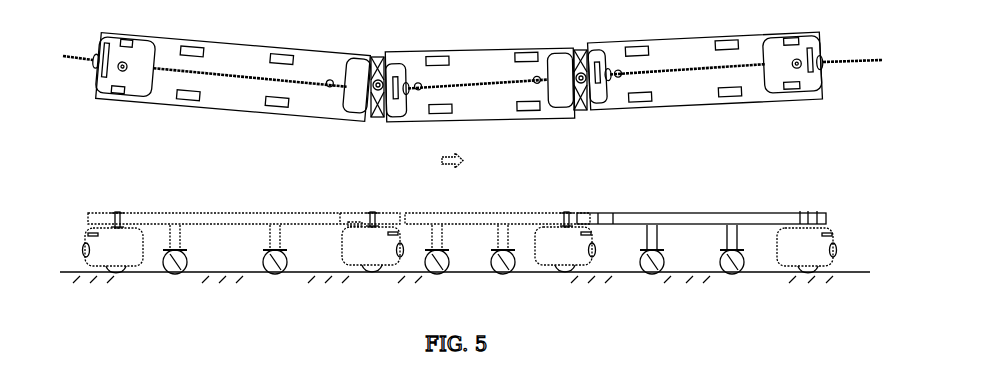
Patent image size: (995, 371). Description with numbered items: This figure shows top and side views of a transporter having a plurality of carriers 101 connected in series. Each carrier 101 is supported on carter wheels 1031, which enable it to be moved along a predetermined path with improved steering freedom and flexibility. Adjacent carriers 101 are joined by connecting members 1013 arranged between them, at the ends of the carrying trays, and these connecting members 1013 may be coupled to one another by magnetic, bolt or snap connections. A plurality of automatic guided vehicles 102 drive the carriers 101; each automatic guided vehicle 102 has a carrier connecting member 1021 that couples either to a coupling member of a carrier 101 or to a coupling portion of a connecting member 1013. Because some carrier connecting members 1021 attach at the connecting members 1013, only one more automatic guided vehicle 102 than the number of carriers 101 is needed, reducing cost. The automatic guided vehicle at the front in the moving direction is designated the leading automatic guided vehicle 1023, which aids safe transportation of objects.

The carrier 101 is at (265, 52).
The automatic guided vehicle 102 is at (106, 38).
The connecting member 1013 is at (383, 67).
The carrier connecting member 1021 is at (117, 212).
The leading automatic guided vehicle 1023 is at (782, 42).
The carter wheel 1031 is at (195, 45).